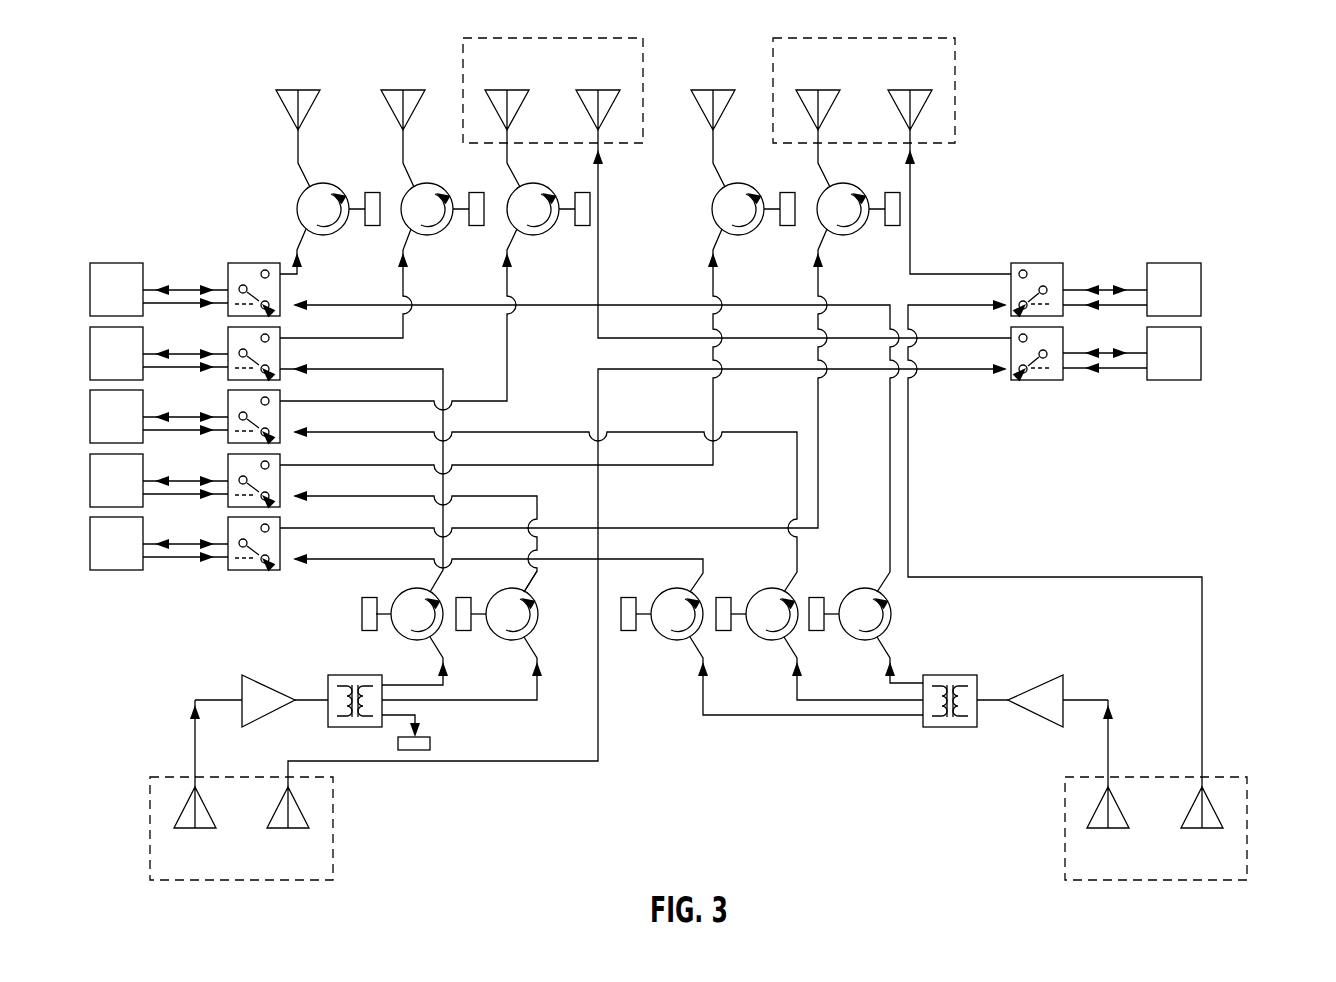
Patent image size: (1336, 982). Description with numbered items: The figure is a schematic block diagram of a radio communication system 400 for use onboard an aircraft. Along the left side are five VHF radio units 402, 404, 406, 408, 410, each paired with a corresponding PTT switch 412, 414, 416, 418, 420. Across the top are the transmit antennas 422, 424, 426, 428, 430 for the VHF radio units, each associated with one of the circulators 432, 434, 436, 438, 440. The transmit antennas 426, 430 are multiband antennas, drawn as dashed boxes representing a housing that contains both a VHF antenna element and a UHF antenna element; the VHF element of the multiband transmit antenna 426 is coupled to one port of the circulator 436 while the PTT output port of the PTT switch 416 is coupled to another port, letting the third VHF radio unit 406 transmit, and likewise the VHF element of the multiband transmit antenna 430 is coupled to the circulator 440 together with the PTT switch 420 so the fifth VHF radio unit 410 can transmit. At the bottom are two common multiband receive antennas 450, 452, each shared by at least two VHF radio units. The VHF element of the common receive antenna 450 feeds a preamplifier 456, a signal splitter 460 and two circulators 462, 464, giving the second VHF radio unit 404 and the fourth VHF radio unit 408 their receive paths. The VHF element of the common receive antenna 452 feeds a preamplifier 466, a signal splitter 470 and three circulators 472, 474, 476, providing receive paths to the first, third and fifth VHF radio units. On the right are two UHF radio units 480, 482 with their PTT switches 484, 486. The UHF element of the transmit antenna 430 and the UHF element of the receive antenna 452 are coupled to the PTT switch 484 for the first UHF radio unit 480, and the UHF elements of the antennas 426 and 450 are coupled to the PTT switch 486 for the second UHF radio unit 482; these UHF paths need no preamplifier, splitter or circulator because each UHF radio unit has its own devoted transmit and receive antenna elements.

The radio communication system 400 is at (140, 82).
The first VHF radio unit 402 is at (90, 288).
The second VHF radio unit 404 is at (90, 352).
The third VHF radio unit 406 is at (90, 416).
The fourth VHF radio unit 408 is at (90, 480).
The fifth VHF radio unit 410 is at (90, 545).
The PTT switch 412 is at (250, 263).
The PTT switch 414 is at (228, 333).
The PTT switch 416 is at (228, 396).
The PTT switch 418 is at (228, 460).
The PTT switch 420 is at (255, 572).
The transmit antenna 422 is at (287, 118).
The transmit antenna 424 is at (392, 118).
The multiband transmit antenna 426 is at (535, 38).
The transmit antenna 428 is at (703, 117).
The multiband transmit antenna 430 is at (895, 38).
The circulator 432 is at (300, 196).
The circulator 434 is at (408, 190).
The circulator 436 is at (513, 190).
The circulator 438 is at (755, 234).
The circulator 440 is at (860, 234).
The common multiband receive antenna 450 is at (150, 826).
The common multiband receive antenna 452 is at (1247, 828).
The preamplifier 456 is at (242, 685).
The signal splitter 460 is at (352, 675).
The circulator 462 is at (400, 595).
The circulator 464 is at (505, 641).
The preamplifier 466 is at (1063, 685).
The signal splitter 470 is at (950, 675).
The circulator 472 is at (868, 588).
The circulator 474 is at (768, 588).
The circulator 476 is at (672, 641).
The first UHF radio unit 480 is at (1175, 263).
The second UHF radio unit 482 is at (1175, 380).
The PTT switch 484 is at (1037, 263).
The PTT switch 486 is at (1037, 380).